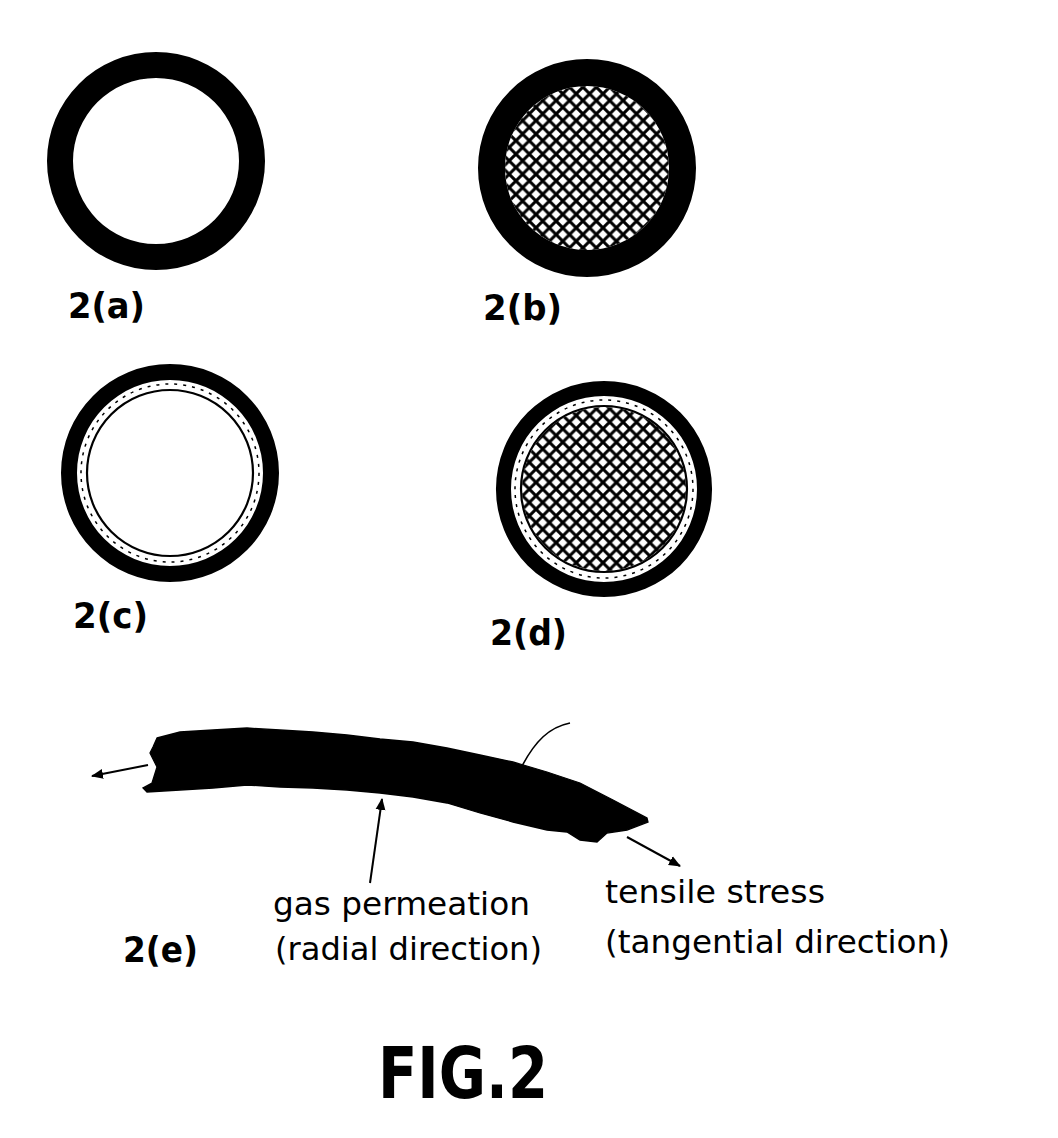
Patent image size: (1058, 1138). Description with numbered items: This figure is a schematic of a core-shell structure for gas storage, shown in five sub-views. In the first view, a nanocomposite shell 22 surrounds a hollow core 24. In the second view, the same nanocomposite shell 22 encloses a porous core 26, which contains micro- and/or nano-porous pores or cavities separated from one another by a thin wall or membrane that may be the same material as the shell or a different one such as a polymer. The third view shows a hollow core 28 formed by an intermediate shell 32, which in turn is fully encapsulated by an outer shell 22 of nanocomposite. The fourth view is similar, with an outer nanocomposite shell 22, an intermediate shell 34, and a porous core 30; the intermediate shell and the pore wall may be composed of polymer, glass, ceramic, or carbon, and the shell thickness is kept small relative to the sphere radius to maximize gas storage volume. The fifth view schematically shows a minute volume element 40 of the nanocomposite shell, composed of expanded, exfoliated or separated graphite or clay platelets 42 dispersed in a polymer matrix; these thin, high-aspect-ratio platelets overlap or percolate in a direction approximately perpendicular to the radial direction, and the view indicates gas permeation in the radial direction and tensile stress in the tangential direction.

The nanocomposite shell 22 is at (210, 65).
The hollow core 24 is at (197, 150).
The porous core 26 is at (660, 85).
The hollow core 28 is at (203, 460).
The porous core 30 is at (637, 473).
The intermediate shell 32 is at (275, 502).
The intermediate shell 34 is at (707, 523).
The tube wall section 40 is at (272, 735).
The crack 42 is at (587, 787).